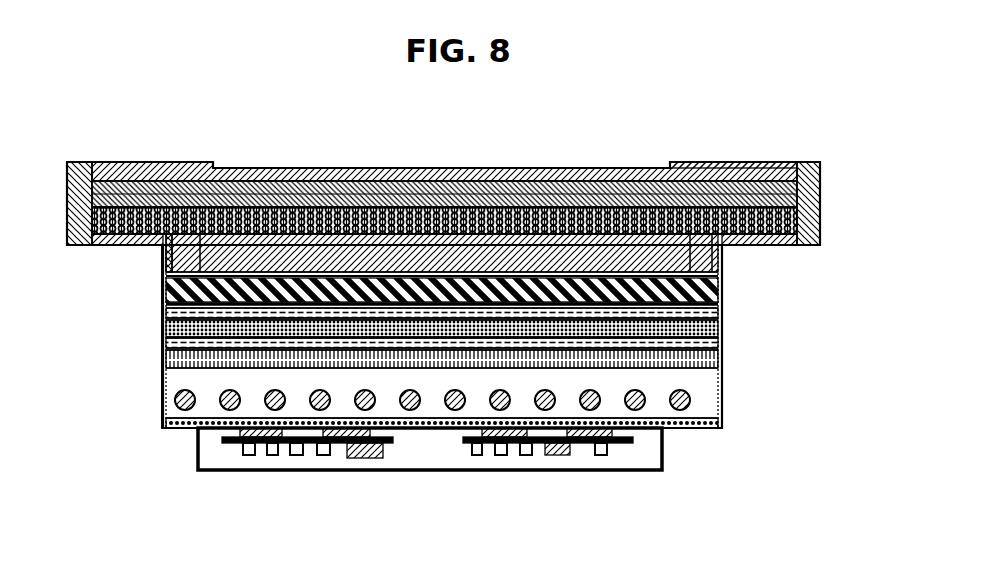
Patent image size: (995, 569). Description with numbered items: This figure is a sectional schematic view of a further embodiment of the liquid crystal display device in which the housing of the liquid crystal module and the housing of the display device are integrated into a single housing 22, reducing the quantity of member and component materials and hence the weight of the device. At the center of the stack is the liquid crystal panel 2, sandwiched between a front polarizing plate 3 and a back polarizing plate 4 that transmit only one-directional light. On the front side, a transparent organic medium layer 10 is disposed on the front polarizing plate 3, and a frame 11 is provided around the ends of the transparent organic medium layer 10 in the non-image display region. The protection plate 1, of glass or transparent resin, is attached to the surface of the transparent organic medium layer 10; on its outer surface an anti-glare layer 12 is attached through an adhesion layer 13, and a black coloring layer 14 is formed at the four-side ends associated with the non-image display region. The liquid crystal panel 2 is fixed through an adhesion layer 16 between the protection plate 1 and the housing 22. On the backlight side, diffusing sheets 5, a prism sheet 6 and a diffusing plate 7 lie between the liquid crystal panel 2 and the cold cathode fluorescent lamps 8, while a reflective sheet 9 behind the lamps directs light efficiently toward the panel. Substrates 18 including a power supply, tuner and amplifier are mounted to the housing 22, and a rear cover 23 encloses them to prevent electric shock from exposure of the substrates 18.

The protection plate 1 is at (560, 180).
The liquid crystal panel 2 is at (427, 303).
The front polarizing plate 3 is at (343, 295).
The back polarizing plate 4 is at (390, 270).
The diffusing sheets 5 is at (162, 302).
The prism sheet 6 is at (162, 333).
The diffusing plate 7 is at (160, 389).
The cold cathode fluorescent lamps 8 is at (160, 418).
The reflective sheet 9 is at (693, 418).
The transparent organic medium layer 10 is at (498, 200).
The frame 11 is at (727, 253).
The anti-glare layer 12 is at (265, 194).
The adhesion layer 13 is at (243, 168).
The black coloring layer 14 is at (722, 163).
The adhesion layer 16 is at (774, 200).
The substrates 18 is at (387, 443).
The housing of the liquid crystal module and liquid crystal display device 22 is at (723, 368).
The rear cover 23 is at (662, 455).